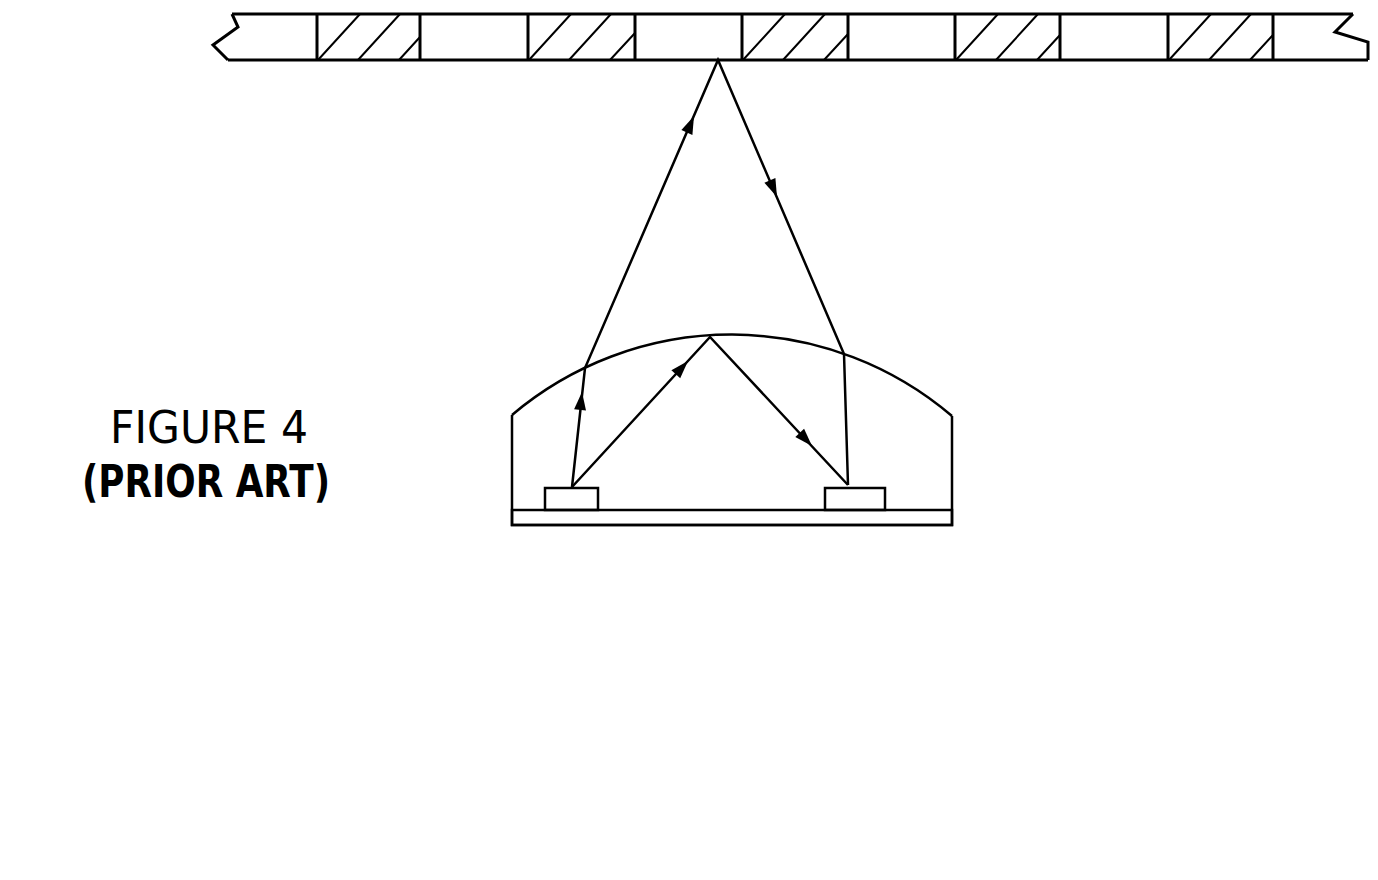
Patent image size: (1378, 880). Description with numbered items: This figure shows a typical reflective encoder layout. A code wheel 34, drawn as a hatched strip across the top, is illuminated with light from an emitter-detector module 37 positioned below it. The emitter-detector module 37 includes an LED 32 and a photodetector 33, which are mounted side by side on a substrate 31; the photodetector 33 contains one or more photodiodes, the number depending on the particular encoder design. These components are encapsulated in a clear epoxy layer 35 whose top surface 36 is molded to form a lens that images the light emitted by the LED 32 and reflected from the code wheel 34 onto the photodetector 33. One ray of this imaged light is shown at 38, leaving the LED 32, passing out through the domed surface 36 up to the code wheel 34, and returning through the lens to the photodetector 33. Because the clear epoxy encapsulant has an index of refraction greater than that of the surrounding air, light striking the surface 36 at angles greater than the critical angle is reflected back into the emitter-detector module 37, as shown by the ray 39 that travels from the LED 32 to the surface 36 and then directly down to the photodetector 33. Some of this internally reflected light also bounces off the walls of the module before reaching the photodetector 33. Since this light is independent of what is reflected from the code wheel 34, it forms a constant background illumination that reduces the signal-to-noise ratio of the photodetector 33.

The substrate 31 is at (688, 515).
The LED 32 is at (592, 502).
The photodetector 33 is at (857, 500).
The code wheel 34 is at (1138, 40).
The clear epoxy layer 35 is at (952, 470).
The surface 36 is at (913, 383).
The emitter-detector module 37 is at (730, 465).
The ray of the imaged light source 38 is at (640, 242).
The reflected light 39 is at (753, 382).